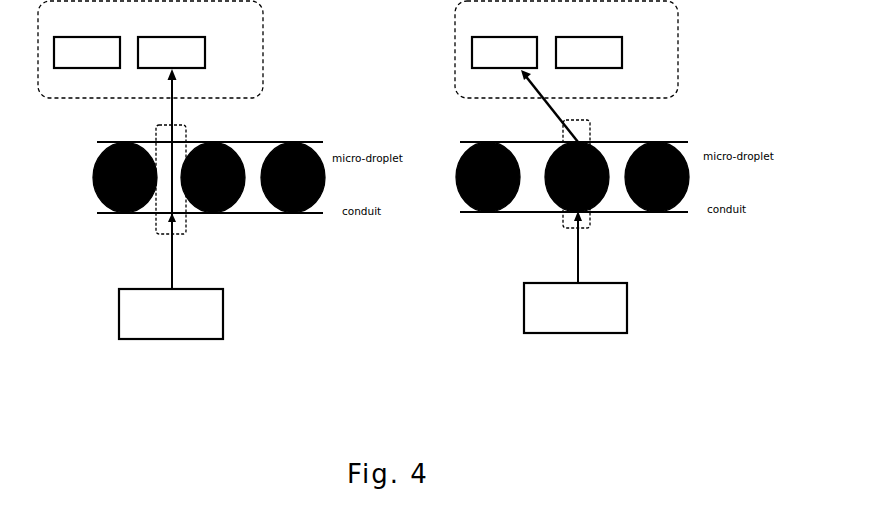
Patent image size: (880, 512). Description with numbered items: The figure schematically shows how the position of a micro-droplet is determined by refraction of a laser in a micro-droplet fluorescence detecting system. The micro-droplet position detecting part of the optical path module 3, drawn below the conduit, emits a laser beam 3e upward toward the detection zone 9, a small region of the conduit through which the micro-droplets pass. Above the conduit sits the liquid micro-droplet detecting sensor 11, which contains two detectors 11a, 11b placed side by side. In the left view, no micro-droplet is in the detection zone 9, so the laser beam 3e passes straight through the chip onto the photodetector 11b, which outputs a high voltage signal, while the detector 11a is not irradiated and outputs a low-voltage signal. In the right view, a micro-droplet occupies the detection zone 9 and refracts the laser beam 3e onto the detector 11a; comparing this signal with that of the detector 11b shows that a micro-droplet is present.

The optical path module 3 is at (381, 325).
The laser beam 3e is at (392, 179).
The detection zone 9 is at (186, 227).
The liquid micro-droplet detecting sensor 11 is at (377, 49).
The detector 11a is at (295, 41).
The photodetector 11b is at (380, 41).